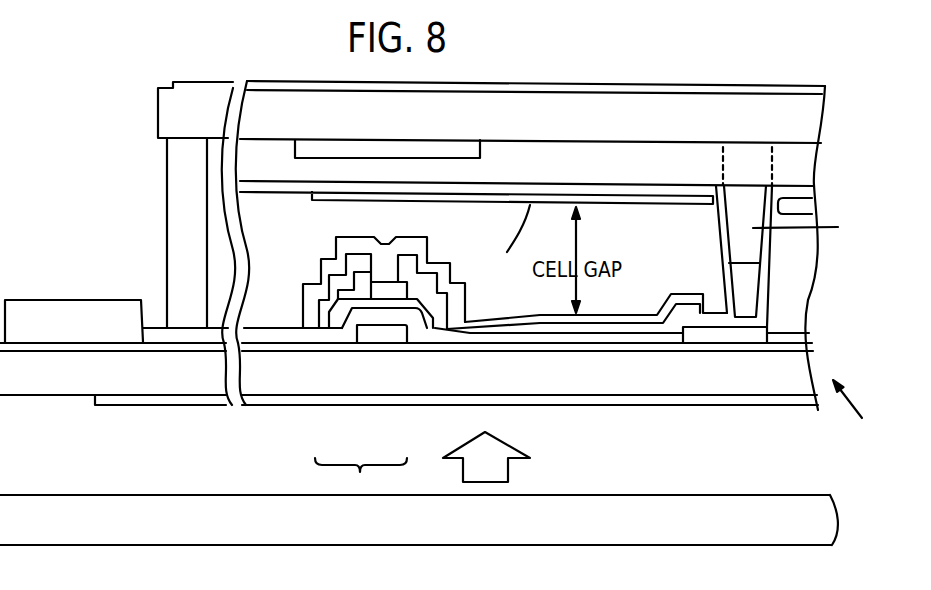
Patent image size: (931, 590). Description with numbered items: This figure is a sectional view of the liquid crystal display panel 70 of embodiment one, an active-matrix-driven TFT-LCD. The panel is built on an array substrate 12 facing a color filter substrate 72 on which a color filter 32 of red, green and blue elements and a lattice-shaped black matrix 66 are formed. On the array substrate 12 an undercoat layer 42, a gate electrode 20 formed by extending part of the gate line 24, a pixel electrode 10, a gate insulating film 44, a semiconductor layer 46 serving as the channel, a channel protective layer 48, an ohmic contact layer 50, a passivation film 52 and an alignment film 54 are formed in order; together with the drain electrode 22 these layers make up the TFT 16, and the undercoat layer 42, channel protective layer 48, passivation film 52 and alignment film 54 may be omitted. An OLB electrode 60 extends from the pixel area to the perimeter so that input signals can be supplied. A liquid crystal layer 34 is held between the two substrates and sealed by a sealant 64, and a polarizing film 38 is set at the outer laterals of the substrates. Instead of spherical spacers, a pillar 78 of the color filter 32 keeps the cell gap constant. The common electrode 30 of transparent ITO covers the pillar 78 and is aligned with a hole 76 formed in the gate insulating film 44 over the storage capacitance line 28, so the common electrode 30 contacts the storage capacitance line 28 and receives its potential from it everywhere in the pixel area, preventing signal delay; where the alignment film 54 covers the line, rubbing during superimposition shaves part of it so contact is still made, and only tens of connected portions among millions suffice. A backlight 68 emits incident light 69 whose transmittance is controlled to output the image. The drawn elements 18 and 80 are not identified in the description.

The pixel electrode 10 is at (513, 328).
The array substrate 12 is at (80, 379).
The TFT 16 is at (368, 499).
The passivation layer 18 is at (407, 260).
The gate electrode 20 is at (380, 340).
The drain electrode 22 is at (305, 313).
The gate line 24 is at (384, 385).
The storage capacitance line 28 is at (722, 342).
The common electrode 30 is at (805, 193).
The color filter 32 is at (545, 174).
The liquid crystal layer 34 is at (812, 272).
The polarizing film 38 is at (573, 88).
The undercoat layer 42 is at (40, 352).
The gate insulating film 44 is at (797, 343).
The semiconductor layer 46 is at (430, 323).
The channel protective layer 48 is at (375, 297).
The ohmic contact layer 50 is at (427, 293).
The passivation film 52 is at (326, 268).
The alignment film 54 is at (517, 313).
The OLB electrode 60 is at (73, 310).
The sealant 64 is at (206, 207).
The black matrix 66 is at (432, 148).
The backlight 68 is at (712, 531).
The incident light 69 is at (528, 455).
The liquid crystal display panel 70 is at (860, 407).
The color filter substrate 72 is at (160, 102).
The hole 76 is at (802, 330).
The pillar 78 is at (755, 280).
The connection electrode 80 is at (755, 323).